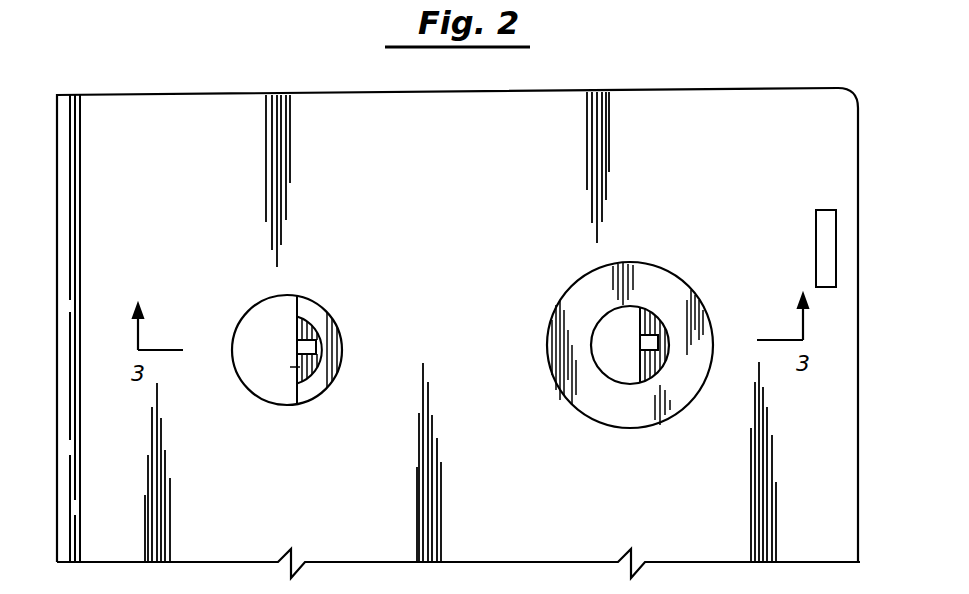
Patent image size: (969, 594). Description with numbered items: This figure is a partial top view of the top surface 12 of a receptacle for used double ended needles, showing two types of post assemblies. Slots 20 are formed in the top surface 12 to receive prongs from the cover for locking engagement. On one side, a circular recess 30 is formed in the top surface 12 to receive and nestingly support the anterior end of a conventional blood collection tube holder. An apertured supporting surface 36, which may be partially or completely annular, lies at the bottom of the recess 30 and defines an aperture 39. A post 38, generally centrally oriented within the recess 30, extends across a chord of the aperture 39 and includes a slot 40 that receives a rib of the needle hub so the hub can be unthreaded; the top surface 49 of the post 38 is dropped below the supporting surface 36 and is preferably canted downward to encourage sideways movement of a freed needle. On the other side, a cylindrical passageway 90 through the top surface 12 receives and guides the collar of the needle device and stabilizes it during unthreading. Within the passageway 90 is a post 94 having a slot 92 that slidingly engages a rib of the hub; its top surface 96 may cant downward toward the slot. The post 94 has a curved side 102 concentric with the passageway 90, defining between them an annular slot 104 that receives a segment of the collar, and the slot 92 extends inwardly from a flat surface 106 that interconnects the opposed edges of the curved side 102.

The top surface 12 is at (528, 500).
The slots 20 is at (822, 244).
The circular recess 30 is at (618, 427).
The apertured supporting surface 36 is at (645, 285).
The post 38 is at (653, 315).
The aperture 39 is at (598, 316).
The slot 40 is at (646, 346).
The top surface of post 49 is at (647, 340).
The cylindrical passageway 90 is at (276, 408).
The slot 92 is at (300, 347).
The post 94 is at (307, 318).
The top surface of post 96 is at (308, 378).
The curved side 102 is at (323, 328).
The annular slot 104 is at (333, 354).
The flat surface 106 is at (298, 368).